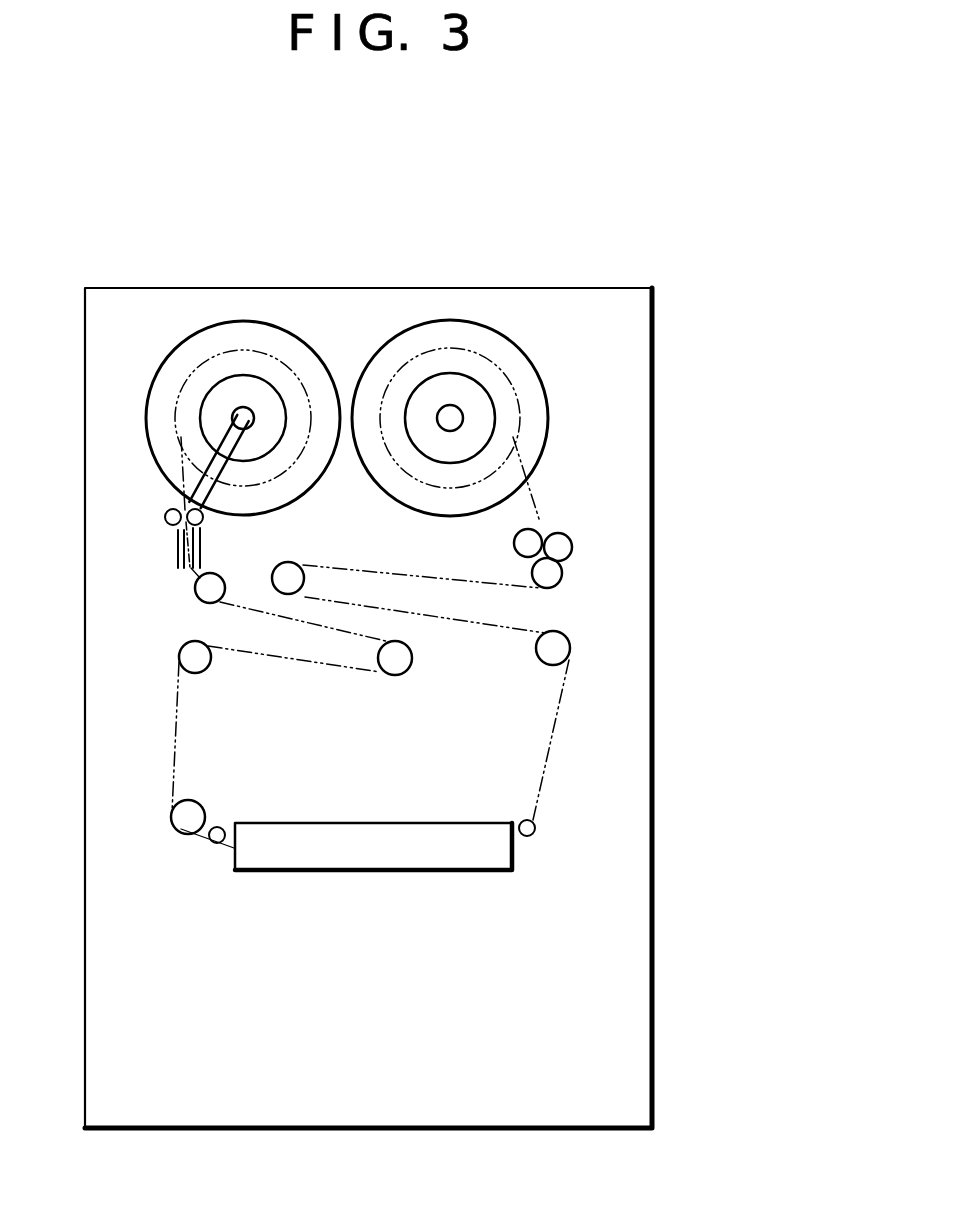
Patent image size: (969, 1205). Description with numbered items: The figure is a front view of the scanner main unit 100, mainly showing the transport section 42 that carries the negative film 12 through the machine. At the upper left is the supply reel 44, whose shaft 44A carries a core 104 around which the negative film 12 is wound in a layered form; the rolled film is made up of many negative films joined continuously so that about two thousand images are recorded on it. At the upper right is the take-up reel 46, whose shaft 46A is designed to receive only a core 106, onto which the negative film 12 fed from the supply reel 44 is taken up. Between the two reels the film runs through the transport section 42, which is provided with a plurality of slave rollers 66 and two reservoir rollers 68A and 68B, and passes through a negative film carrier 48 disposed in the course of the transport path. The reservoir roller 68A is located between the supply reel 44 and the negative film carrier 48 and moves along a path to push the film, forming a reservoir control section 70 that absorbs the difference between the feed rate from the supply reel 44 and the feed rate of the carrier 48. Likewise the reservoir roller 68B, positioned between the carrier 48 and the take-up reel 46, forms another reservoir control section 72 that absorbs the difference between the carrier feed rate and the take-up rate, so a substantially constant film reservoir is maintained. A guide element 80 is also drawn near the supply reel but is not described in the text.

The scanner main unit 100 is at (636, 257).
The core 104 is at (243, 378).
The core 106 is at (447, 385).
The supply reel 44 is at (272, 337).
The shaft 44A is at (233, 405).
The take-up reel 46 is at (503, 355).
The shaft 46A is at (467, 413).
The tape guide arm 80 is at (157, 514).
The slave rollers 66 is at (178, 654).
The reservoir roller 68B is at (287, 563).
The reservoir roller 68A is at (407, 670).
The reservoir control section 72 is at (378, 567).
The reservoir control section 70 is at (327, 682).
The negative film 12 is at (170, 750).
The transport section 42 is at (327, 876).
The negative film carrier 48 is at (325, 872).